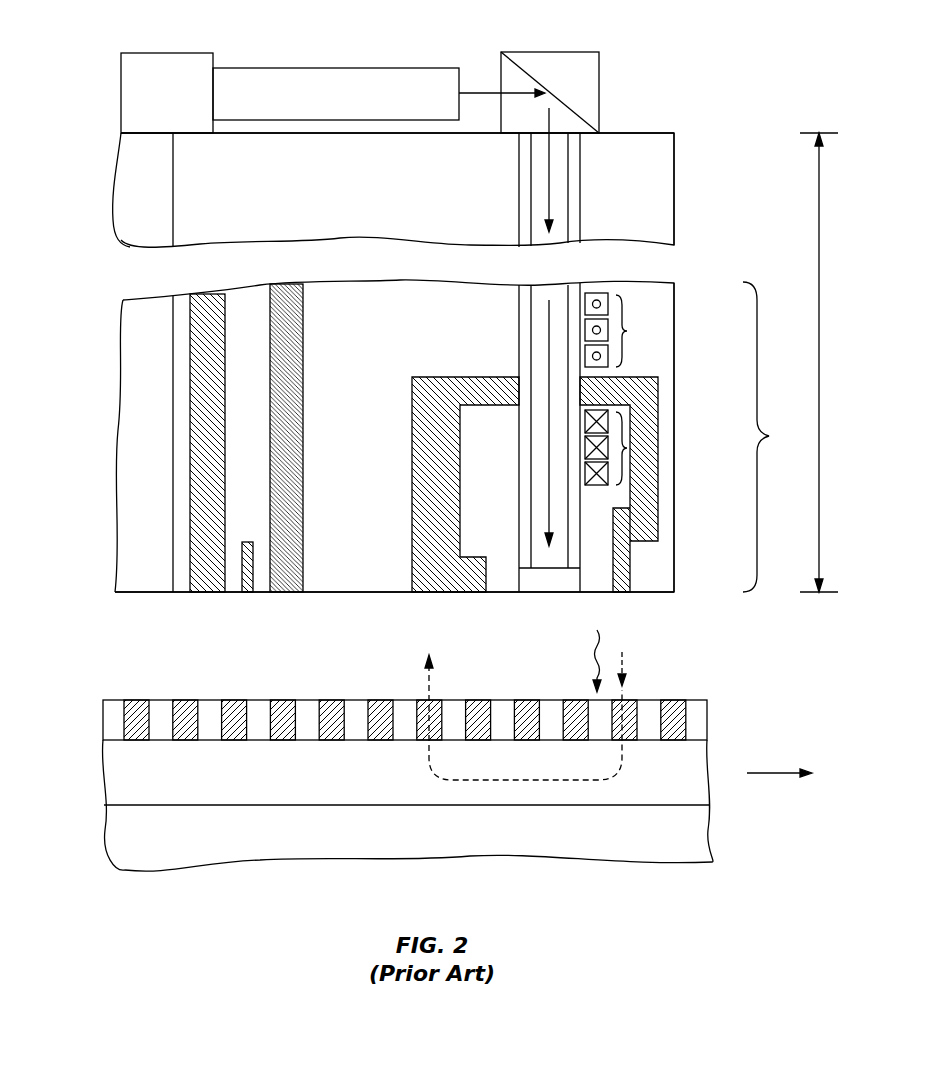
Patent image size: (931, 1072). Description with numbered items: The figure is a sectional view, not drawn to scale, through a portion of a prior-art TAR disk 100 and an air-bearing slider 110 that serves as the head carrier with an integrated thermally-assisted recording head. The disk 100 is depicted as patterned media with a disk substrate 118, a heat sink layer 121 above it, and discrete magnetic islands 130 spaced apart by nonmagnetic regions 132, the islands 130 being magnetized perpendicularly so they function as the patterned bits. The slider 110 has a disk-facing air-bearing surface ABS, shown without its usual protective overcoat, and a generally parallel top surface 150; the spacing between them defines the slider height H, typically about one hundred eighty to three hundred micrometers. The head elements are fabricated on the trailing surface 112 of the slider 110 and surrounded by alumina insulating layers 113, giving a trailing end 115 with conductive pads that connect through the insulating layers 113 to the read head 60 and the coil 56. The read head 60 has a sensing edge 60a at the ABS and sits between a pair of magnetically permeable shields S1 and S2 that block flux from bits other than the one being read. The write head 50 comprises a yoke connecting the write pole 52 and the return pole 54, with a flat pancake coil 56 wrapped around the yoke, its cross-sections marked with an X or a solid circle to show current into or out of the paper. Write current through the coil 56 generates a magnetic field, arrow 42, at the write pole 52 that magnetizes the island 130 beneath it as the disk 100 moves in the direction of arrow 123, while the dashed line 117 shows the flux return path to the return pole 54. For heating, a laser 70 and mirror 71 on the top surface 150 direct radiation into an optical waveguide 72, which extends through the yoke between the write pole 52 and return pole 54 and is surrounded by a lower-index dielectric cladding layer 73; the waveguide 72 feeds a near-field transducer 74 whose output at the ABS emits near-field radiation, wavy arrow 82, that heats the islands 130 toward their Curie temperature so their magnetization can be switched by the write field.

The laser 70 is at (143, 53).
The mirror 71 is at (598, 93).
The optical waveguide 72 is at (537, 202).
The dielectric cladding layer 73 is at (523, 293).
The near-field transducer 74 is at (538, 587).
The air-bearing slider 110 is at (130, 178).
The trailing surface 112 is at (173, 216).
The insulating layers 113 is at (660, 170).
The trailing end 115 is at (675, 210).
The top surface 150 is at (655, 133).
The write head 50 is at (774, 437).
The write pole 52 is at (630, 552).
The return pole 54 is at (455, 580).
The coil 56 is at (628, 448).
The read head 60 is at (240, 552).
The sensing edge 60a is at (247, 595).
The magnetic permeable shield S1 is at (190, 343).
The magnetic permeable shield S2 is at (303, 340).
The air-bearing surface ABS is at (137, 595).
The height H is at (819, 362).
The TAR disk 100 is at (112, 884).
The discrete magnetic islands 130 is at (125, 722).
The nonmagnetic regions 132 is at (160, 700).
The heat sink layer 121 is at (688, 777).
The disk substrate 118 is at (695, 826).
The flux return path 117 is at (517, 780).
The near-field radiation 82 is at (595, 650).
The magnetic field 42 is at (625, 660).
The direction of disk motion 123 is at (780, 772).